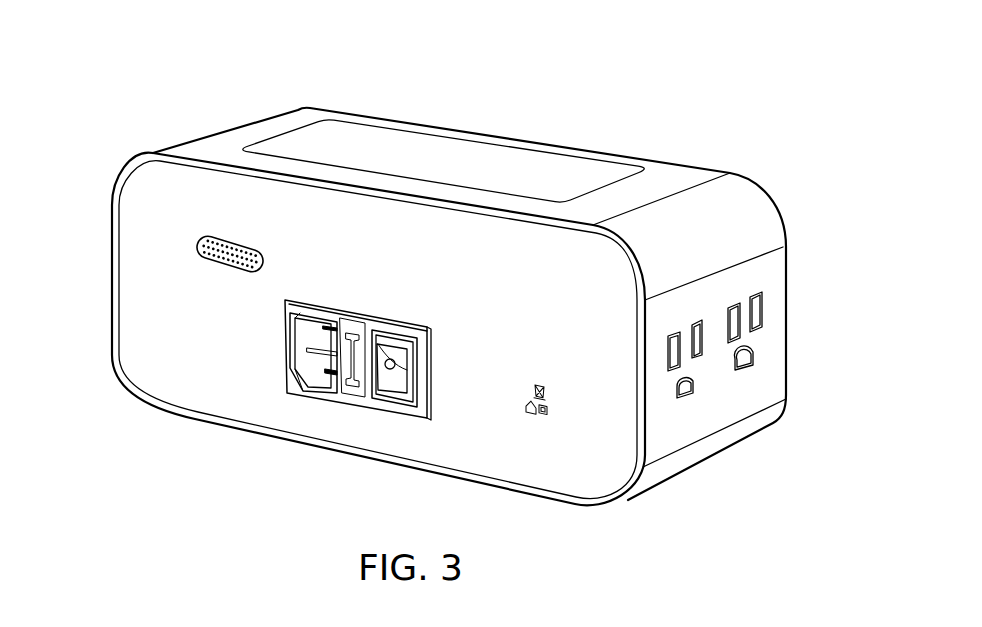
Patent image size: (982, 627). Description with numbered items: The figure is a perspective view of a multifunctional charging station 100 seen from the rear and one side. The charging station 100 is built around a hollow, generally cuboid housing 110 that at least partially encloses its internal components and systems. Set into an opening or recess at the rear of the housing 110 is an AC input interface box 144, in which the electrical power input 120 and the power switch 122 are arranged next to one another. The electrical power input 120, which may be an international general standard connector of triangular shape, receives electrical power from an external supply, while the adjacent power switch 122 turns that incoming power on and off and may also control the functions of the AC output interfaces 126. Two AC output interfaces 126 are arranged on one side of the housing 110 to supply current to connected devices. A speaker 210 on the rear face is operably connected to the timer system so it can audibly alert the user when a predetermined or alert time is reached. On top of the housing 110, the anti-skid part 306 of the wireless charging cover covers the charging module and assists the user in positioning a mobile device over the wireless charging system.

The charging station 100 is at (160, 85).
The housing 110 is at (705, 213).
The electrical power input 120 is at (317, 395).
The power switch 122 is at (385, 393).
The AC output interface 126 is at (693, 388).
The AC input interface box 144 is at (287, 367).
The speaker 210 is at (195, 243).
The anti-skid part 306 is at (487, 168).